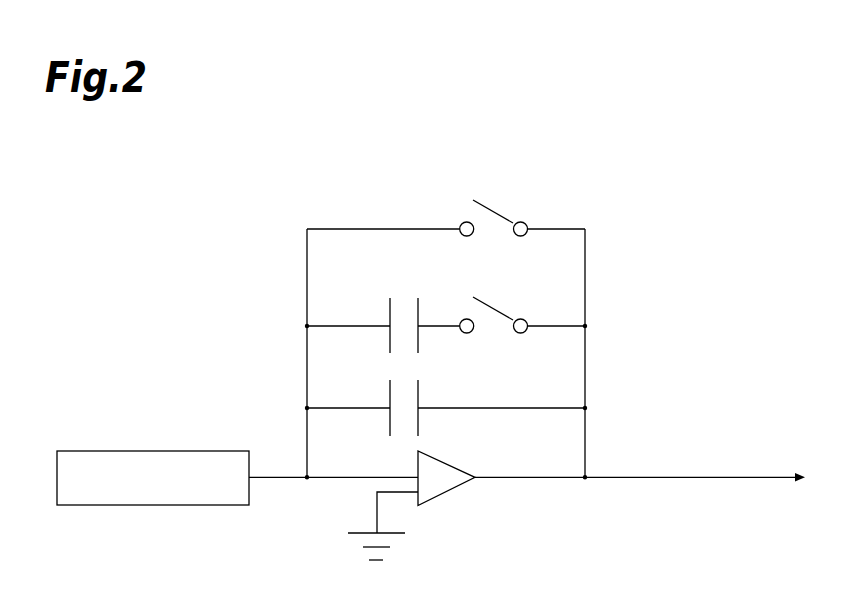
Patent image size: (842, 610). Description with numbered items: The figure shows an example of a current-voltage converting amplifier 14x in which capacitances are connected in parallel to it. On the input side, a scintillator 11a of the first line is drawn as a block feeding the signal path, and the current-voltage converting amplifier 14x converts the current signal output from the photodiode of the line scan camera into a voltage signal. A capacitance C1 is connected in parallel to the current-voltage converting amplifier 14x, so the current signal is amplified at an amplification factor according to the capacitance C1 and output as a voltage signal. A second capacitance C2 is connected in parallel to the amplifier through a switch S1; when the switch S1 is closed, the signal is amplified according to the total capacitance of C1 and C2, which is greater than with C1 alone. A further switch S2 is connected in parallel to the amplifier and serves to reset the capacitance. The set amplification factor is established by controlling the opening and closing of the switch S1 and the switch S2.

The scintillator 11a is at (148, 505).
The current-voltage converting amplifier 14x is at (455, 496).
The switch S1 is at (506, 311).
The switch S2 is at (506, 214).
The capacitance C1 is at (387, 396).
The capacitance C2 is at (387, 308).